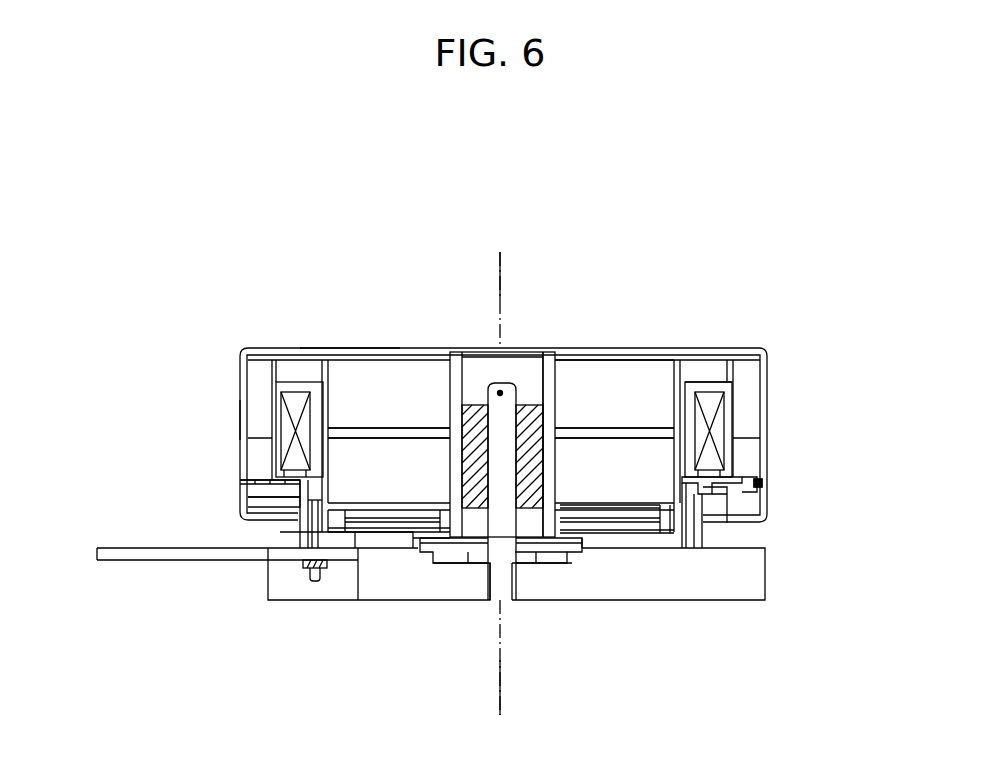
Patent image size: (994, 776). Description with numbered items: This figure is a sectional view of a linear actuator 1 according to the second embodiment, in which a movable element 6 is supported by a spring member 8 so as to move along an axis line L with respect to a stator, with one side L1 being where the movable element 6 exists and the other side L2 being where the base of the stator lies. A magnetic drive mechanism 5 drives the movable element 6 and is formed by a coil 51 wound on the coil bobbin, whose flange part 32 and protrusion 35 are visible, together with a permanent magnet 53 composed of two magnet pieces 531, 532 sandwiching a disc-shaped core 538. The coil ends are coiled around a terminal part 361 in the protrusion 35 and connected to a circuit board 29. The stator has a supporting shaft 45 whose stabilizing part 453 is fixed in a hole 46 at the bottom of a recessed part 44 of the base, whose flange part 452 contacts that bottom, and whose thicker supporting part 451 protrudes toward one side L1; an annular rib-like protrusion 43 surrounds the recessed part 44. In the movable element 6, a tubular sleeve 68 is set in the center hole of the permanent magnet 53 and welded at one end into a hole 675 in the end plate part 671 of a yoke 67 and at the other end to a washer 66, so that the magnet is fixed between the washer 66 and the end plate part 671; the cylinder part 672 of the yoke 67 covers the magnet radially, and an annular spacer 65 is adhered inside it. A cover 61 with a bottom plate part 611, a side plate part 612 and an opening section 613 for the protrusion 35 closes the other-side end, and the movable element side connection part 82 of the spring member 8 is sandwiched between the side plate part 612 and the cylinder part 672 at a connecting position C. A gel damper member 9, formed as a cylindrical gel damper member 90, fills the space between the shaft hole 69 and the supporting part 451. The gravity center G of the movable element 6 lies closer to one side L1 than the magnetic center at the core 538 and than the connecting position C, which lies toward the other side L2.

The linear actuator 1 is at (764, 308).
The magnetic drive mechanism 5 is at (870, 345).
The coil 51 is at (725, 458).
The permanent magnet 53 is at (828, 345).
The magnet piece 531 is at (663, 402).
The magnet piece 532 is at (663, 460).
The movable element 6 is at (133, 338).
The cover 61 is at (242, 490).
The bottom plate part 611 is at (290, 508).
The side plate part 612 is at (237, 498).
The opening section 613 is at (300, 512).
The annular spacer 65 is at (258, 376).
The washer 66 is at (443, 505).
The yoke 67 is at (250, 366).
The end plate part 671 is at (345, 348).
The cylinder part 672 is at (237, 423).
The hole 675 is at (447, 352).
The tubular sleeve 68 is at (460, 400).
The shaft hole 69 is at (547, 463).
The gel damper member 9 is at (537, 440).
The cylindrical gel damper member 90 is at (501, 433).
The spring member 8 is at (721, 490).
The movable element side connection part 82 is at (758, 490).
The circuit board 29 is at (104, 548).
The flange part 32 is at (698, 372).
The protrusion 35 is at (315, 517).
The terminal part 361 is at (315, 578).
The annular rib-like protrusion 43 is at (587, 547).
The recessed part 44 is at (560, 567).
The supporting shaft 45 is at (498, 448).
The supporting part 451 is at (512, 423).
The flange part 452 is at (470, 567).
The stabilizing part 453 is at (497, 585).
The hole 46 is at (514, 582).
The core 538 is at (634, 372).
The gravity center G is at (500, 393).
The connecting position C is at (762, 484).
The axis line L is at (510, 483).
The one side L1 is at (500, 263).
The other side L2 is at (501, 700).